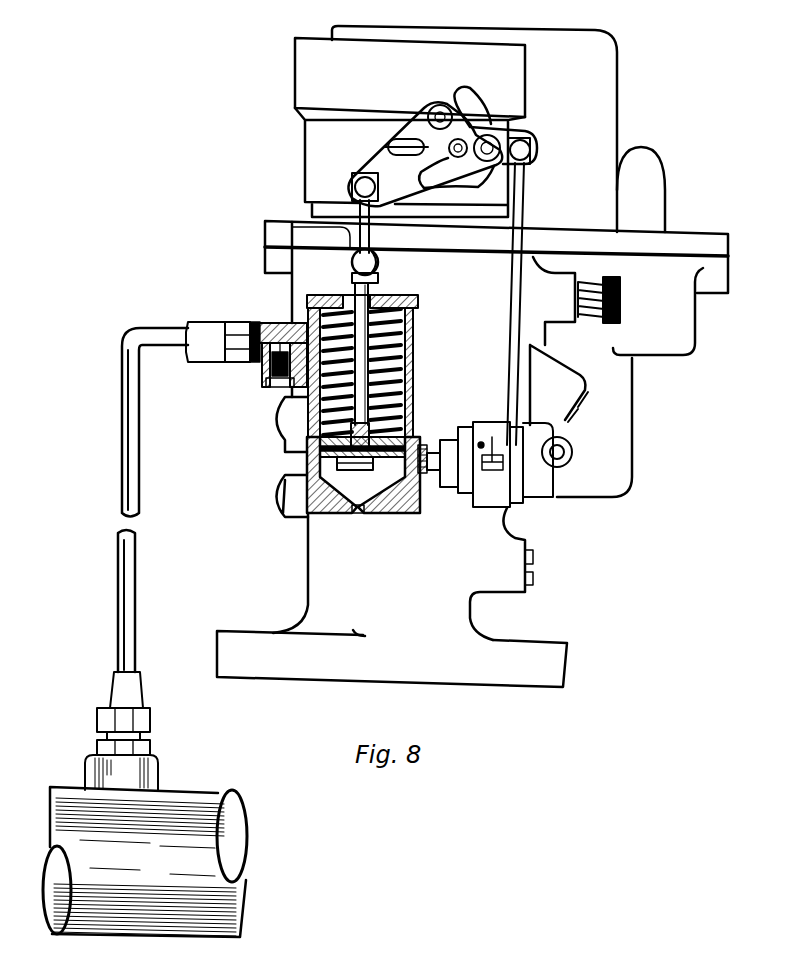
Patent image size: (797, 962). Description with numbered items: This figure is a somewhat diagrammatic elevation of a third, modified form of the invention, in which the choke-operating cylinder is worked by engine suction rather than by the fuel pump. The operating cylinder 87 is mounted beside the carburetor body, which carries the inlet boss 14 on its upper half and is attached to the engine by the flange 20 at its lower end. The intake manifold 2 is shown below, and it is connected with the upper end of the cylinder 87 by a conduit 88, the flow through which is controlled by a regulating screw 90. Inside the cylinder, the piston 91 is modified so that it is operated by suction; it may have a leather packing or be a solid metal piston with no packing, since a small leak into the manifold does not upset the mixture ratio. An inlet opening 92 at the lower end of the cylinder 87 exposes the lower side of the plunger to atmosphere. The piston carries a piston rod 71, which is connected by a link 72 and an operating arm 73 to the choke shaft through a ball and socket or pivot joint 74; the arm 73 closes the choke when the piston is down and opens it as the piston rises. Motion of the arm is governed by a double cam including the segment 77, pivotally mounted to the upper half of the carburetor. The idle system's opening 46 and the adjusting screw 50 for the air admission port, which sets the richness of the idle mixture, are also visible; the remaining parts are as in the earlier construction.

The intake manifold 2 is at (177, 831).
The inlet boss 14 is at (653, 183).
The flange 20 is at (547, 653).
The opening 46 is at (441, 182).
The adjusting screw 50 is at (620, 307).
The piston rod 71 is at (368, 400).
The link 72 is at (362, 233).
The operating arm 73 is at (383, 151).
The ball and socket or pivot joint 74 is at (360, 259).
The cam segment 77 is at (462, 111).
The operating cylinder 87 is at (310, 404).
The conduit 88 is at (143, 448).
The regulating screw 90 is at (268, 387).
The piston 91 is at (310, 451).
The inlet opening 92 is at (353, 512).